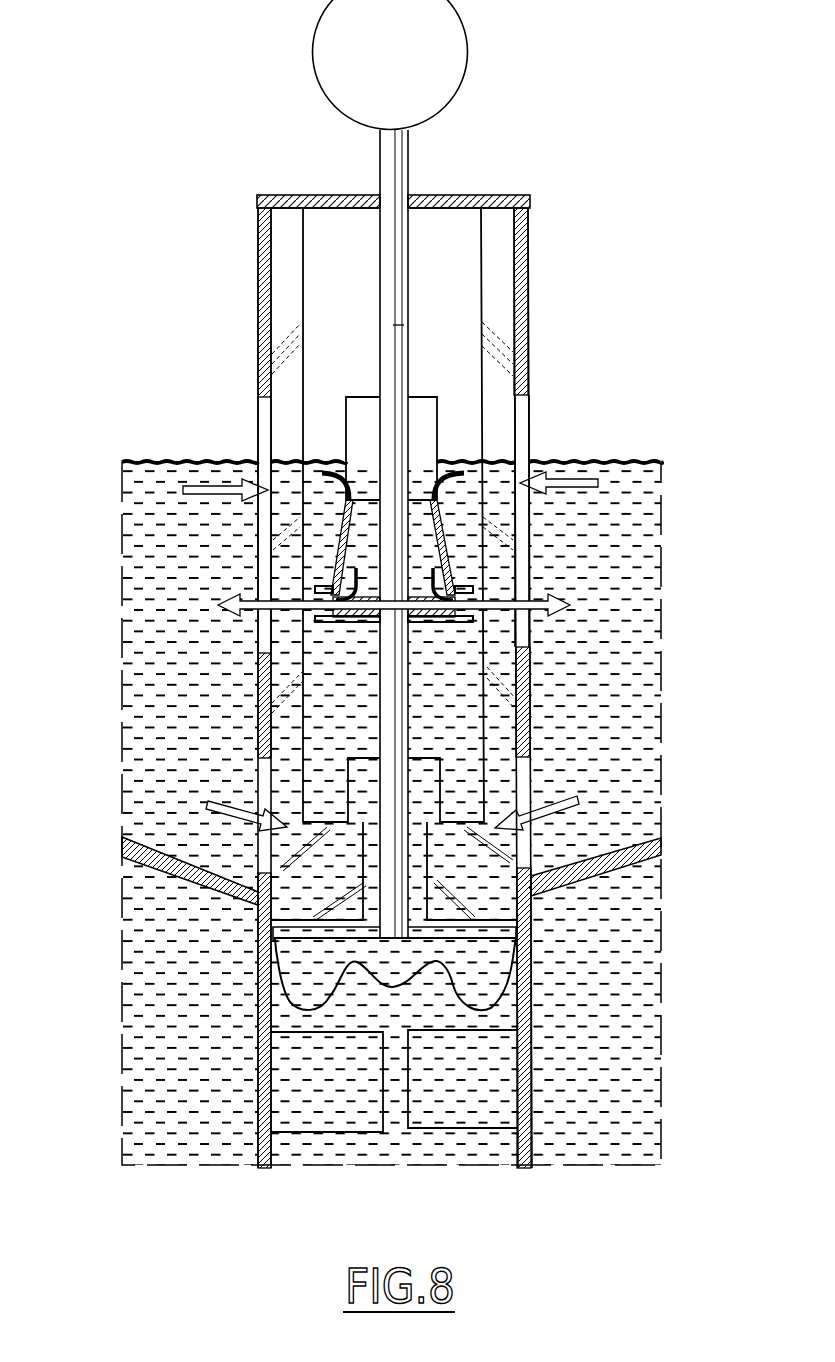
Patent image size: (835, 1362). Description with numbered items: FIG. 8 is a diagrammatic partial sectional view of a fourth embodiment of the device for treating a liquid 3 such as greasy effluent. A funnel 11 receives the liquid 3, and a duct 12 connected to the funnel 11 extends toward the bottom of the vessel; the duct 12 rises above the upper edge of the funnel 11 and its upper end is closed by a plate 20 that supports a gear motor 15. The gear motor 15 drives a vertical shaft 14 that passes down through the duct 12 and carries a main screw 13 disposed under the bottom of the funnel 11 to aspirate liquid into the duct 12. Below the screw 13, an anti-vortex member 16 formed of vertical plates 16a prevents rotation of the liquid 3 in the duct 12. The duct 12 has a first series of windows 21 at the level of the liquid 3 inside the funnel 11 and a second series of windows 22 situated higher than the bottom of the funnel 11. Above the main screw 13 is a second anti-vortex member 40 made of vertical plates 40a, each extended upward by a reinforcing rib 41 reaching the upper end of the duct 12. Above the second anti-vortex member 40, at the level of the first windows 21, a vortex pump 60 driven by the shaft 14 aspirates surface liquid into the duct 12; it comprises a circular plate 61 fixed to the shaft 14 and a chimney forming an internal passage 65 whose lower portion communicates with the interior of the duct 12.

The liquid 3 is at (612, 560).
The funnel 11 is at (658, 852).
The duct 12 is at (532, 1146).
The main screw 13 is at (490, 967).
The vertical shaft 14 is at (395, 325).
The gear motor 15 is at (463, 88).
The anti-vortex member 16 is at (272, 1098).
The vertical plates 16a is at (483, 1090).
The plate 20 is at (450, 193).
The first series of windows 21 is at (257, 417).
The second series of windows 22 is at (530, 782).
The second anti-vortex member 40 is at (273, 937).
The vertical plates 40a is at (477, 878).
The reinforcing rib 41 is at (292, 278).
The vortex pump 60 is at (462, 537).
The circular plate 61 is at (433, 623).
The internal passage 65 is at (357, 565).